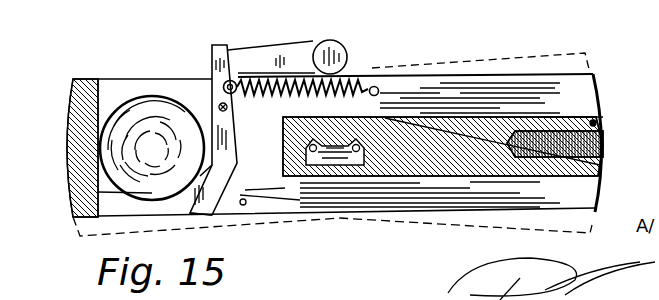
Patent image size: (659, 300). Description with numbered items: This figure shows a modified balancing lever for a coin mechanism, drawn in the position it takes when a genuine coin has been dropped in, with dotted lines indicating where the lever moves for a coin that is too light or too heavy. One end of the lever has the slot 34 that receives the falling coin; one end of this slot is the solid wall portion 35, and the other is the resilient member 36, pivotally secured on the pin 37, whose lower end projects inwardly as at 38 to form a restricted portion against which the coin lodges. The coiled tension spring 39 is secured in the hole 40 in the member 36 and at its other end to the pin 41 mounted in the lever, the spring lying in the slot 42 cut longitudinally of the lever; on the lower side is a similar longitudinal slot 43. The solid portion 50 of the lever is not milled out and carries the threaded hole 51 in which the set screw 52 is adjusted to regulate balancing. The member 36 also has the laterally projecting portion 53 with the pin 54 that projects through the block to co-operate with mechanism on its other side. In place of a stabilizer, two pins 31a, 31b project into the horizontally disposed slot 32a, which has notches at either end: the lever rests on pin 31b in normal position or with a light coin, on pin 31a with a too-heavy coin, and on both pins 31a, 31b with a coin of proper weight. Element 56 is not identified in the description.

The pin 31a is at (313, 168).
The pin 31b is at (357, 165).
The horizontally disposed slot 32a is at (334, 168).
The slot 34 is at (114, 97).
The solid wall portion 35 is at (68, 126).
The resilient member 36 is at (208, 104).
The pin 37 is at (227, 109).
The inwardly projecting portion 38 is at (198, 202).
The coiled tension spring 39 is at (359, 87).
The hole 40 is at (233, 91).
The pin 41 is at (380, 91).
The slot 42 is at (493, 88).
The slot 43 is at (594, 195).
The solid portion 50 is at (427, 142).
The hole 51 is at (543, 117).
The set screw 52 is at (580, 117).
The laterally projecting portion 53 is at (296, 50).
The pin 54 is at (367, 36).
The pin 56 is at (598, 120).